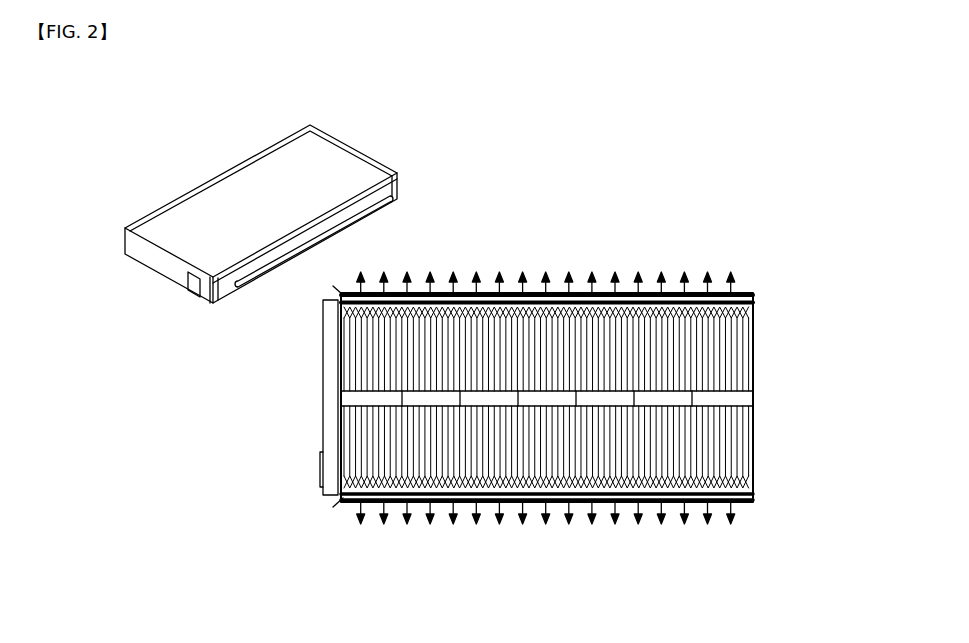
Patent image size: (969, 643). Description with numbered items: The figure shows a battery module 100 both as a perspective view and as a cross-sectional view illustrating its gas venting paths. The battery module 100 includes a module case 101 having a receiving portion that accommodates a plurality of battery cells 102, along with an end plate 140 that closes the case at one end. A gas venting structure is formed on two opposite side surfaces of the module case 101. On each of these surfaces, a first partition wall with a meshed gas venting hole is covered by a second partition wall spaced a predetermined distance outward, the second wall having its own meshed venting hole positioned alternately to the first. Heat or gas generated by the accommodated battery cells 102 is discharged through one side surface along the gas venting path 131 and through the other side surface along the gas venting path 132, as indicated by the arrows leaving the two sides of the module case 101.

The battery module 100 is at (150, 131).
The module case 101 is at (755, 425).
The battery cell 102 is at (723, 363).
The gas venting path 131 is at (478, 276).
The gas venting path 132 is at (663, 519).
The end plate 140 is at (323, 402).